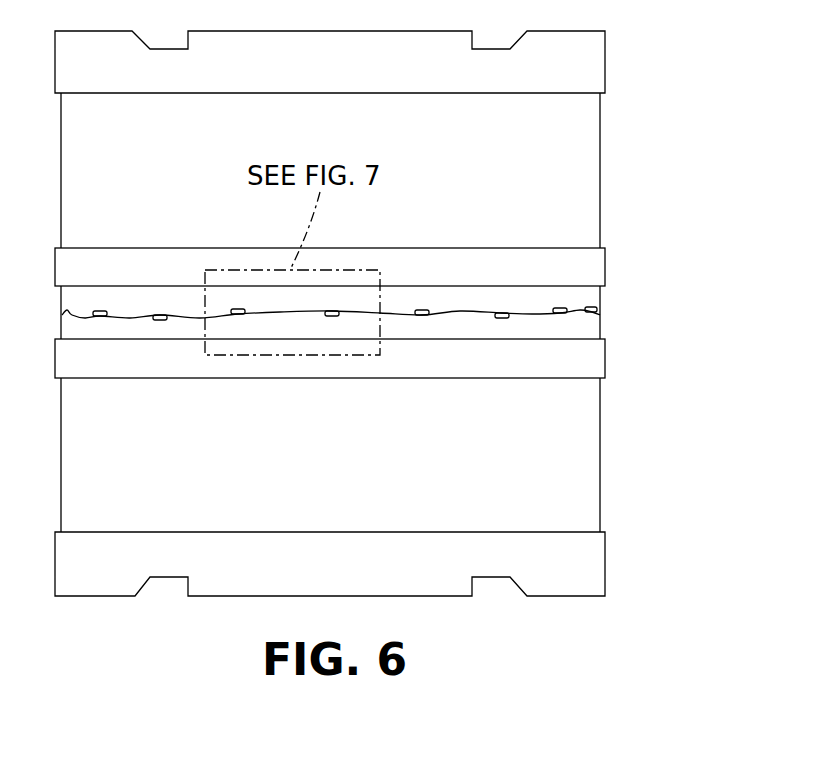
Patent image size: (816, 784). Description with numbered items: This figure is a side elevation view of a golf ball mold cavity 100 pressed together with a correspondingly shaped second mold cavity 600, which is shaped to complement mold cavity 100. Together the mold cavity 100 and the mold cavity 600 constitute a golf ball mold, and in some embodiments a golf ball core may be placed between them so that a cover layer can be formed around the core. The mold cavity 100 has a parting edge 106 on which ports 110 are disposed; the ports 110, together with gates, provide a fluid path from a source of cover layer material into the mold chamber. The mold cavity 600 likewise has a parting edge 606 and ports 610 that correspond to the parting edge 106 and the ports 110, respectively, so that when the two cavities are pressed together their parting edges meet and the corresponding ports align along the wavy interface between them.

The second mold cavity 600 is at (577, 160).
The parting edge 606 is at (532, 313).
The ports 610 is at (100, 310).
The ports 110 is at (160, 320).
The parting edge 106 is at (538, 318).
The mold cavity 100 is at (573, 447).